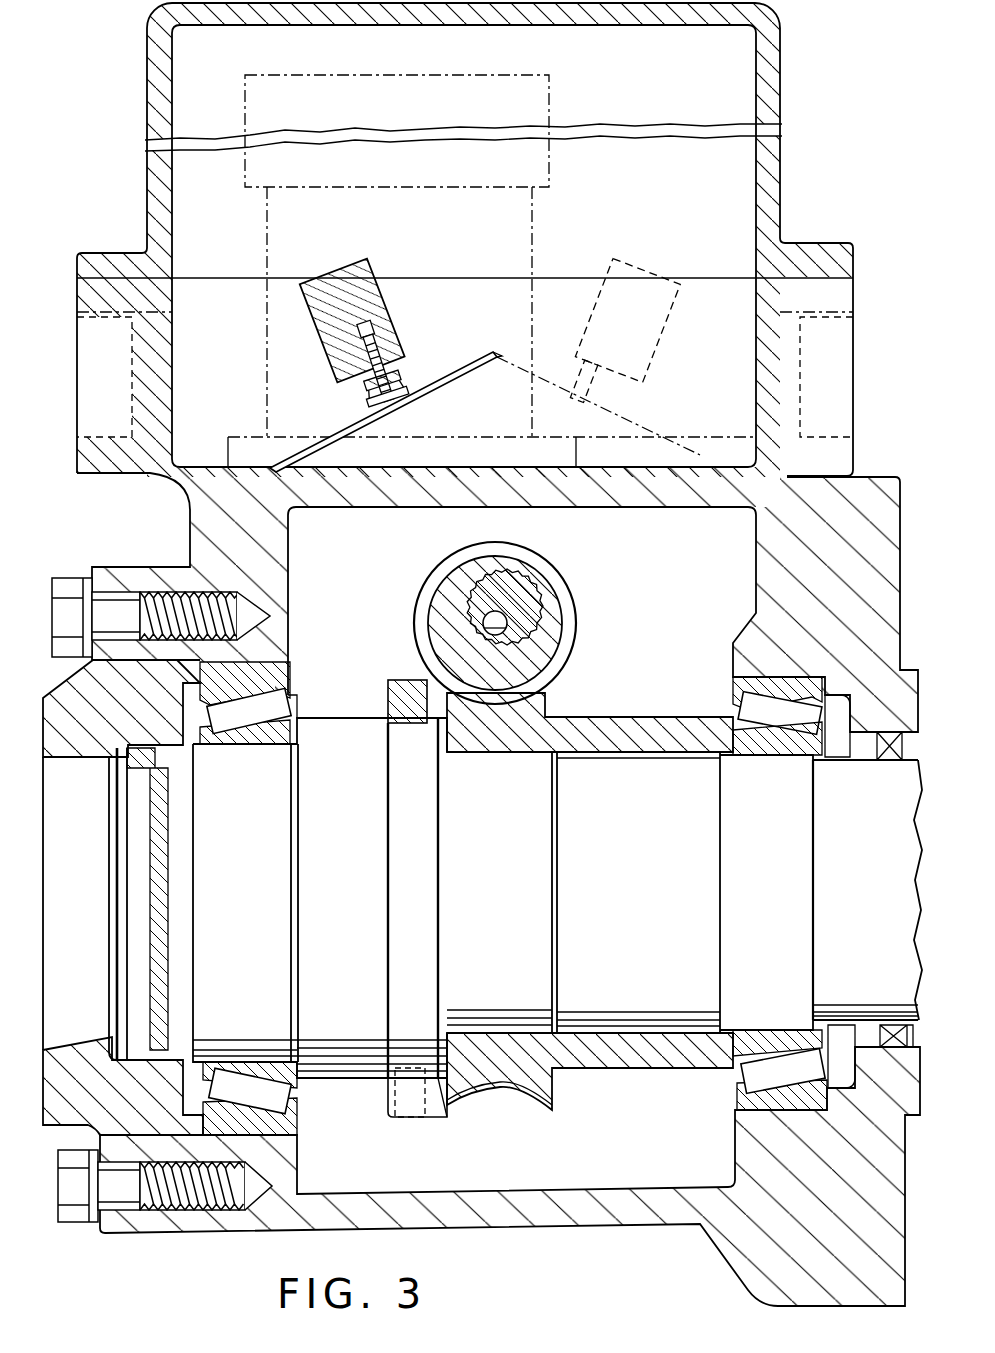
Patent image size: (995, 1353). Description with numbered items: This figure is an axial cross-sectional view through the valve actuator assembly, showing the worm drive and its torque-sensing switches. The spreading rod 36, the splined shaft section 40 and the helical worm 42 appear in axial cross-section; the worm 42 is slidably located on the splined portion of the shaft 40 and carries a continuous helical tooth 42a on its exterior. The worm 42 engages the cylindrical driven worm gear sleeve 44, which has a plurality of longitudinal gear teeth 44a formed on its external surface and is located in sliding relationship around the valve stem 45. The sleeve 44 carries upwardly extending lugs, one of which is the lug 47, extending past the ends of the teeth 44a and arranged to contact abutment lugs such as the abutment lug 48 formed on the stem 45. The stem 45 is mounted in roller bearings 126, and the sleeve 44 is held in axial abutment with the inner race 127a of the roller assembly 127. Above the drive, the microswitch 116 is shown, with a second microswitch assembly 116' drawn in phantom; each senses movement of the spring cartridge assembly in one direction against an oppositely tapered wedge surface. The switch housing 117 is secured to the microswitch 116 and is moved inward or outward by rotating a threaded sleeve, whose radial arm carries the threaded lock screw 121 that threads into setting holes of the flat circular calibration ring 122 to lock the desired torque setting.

The spreading rod 36 is at (506, 628).
The shaft 40 is at (534, 607).
The helical worm 42 is at (520, 578).
The continuous helical tooth 42a is at (441, 572).
The driven worm gear sleeve 44 is at (608, 727).
The longitudinal gear teeth 44a is at (500, 1097).
The valve stem 45 is at (622, 881).
The upwardly extending lug 47 is at (418, 725).
The abutment lug 48 is at (390, 690).
The microswitch 116 is at (346, 301).
The second microswitch assembly 116' is at (631, 318).
The housing 117 is at (360, 392).
The threaded lock screw 121 is at (383, 325).
The flat circular calibration ring 122 is at (415, 376).
The roller bearings 126 is at (290, 700).
The roller assembly 127 is at (745, 690).
The inner race 127a is at (745, 752).